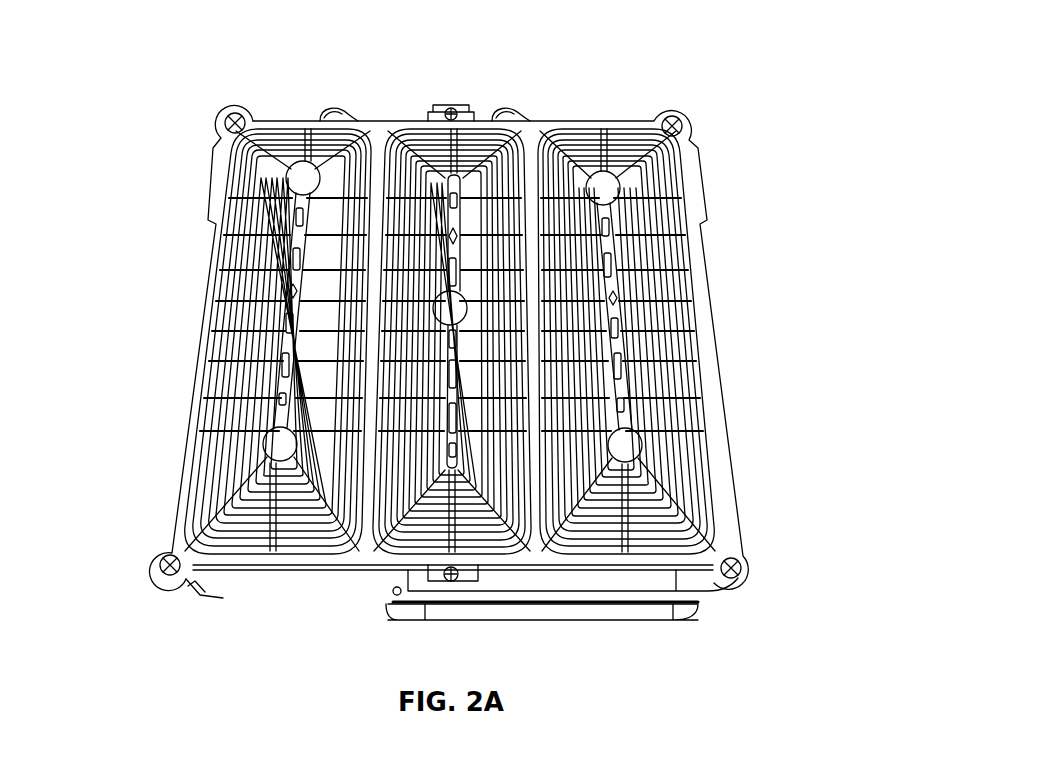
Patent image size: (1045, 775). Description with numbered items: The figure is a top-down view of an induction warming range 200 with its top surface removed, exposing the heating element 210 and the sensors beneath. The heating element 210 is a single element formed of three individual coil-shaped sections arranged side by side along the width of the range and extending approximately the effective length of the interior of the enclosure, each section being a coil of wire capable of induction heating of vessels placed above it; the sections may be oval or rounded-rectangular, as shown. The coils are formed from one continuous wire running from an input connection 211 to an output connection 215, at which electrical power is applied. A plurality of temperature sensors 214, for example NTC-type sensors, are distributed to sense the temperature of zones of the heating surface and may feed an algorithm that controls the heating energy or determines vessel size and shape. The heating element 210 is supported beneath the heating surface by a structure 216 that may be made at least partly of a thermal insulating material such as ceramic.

The induction warming range 200 is at (136, 128).
The heating element 210 is at (210, 370).
The input connection 211 is at (327, 98).
The temperature sensors 214 is at (262, 428).
The output connection 215 is at (497, 98).
The structure 216 is at (172, 535).